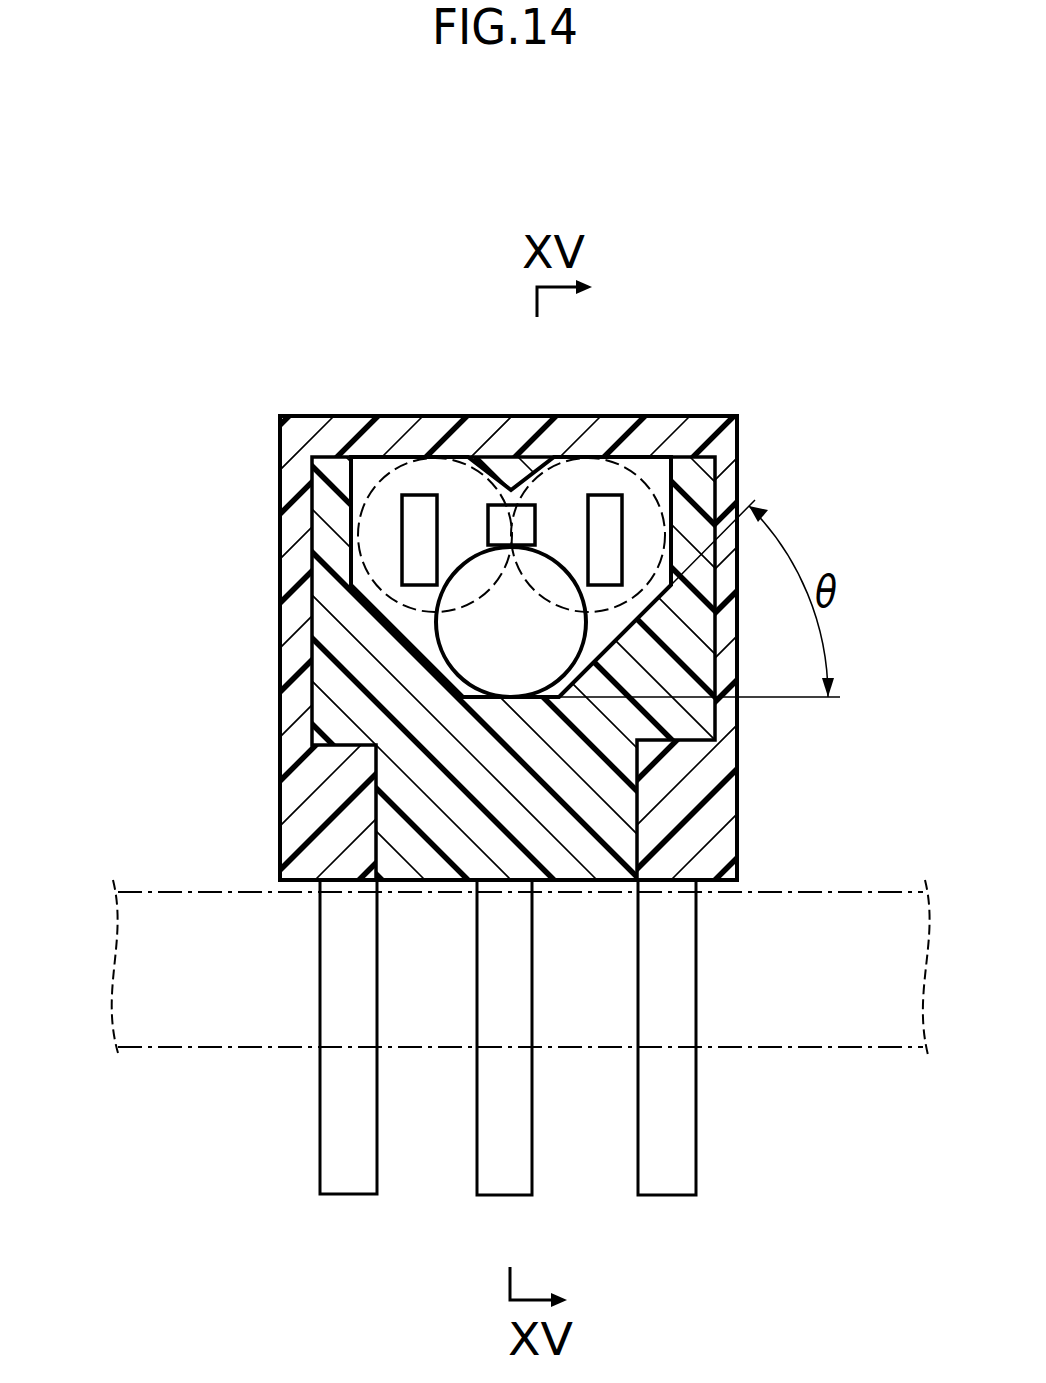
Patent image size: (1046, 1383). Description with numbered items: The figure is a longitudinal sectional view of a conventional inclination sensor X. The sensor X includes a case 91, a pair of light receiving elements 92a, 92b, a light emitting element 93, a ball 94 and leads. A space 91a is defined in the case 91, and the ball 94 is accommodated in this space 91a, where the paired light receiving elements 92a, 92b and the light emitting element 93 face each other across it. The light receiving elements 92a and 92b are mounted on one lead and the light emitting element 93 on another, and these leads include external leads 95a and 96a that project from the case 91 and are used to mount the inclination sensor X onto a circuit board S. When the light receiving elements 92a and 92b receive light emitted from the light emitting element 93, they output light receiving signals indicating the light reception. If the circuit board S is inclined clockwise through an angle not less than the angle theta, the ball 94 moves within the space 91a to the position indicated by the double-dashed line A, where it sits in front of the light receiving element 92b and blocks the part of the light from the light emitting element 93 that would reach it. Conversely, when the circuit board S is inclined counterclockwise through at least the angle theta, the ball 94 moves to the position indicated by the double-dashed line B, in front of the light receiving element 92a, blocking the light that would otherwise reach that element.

The case 91 is at (297, 420).
The space 91a is at (655, 480).
The light receiving element 92a is at (422, 515).
The light receiving element 92b is at (602, 510).
The light emitting element 93 is at (499, 515).
The ball 94 is at (462, 650).
The external lead 95a is at (667, 1173).
The external lead 96a is at (492, 1087).
The circuit board S is at (840, 890).
The inclination sensor X is at (148, 398).
The double-dashed line A is at (600, 455).
The double-dashed line B is at (357, 422).